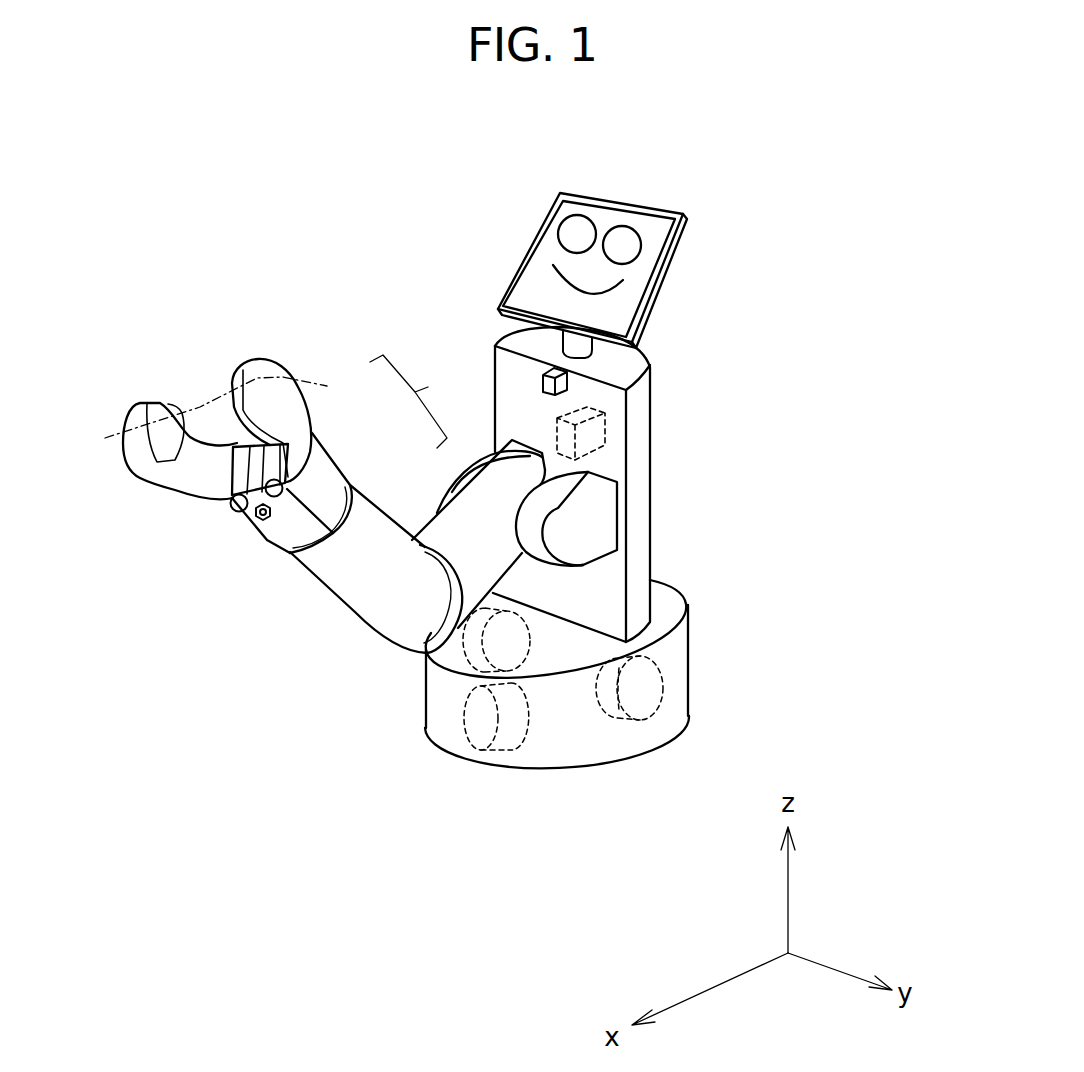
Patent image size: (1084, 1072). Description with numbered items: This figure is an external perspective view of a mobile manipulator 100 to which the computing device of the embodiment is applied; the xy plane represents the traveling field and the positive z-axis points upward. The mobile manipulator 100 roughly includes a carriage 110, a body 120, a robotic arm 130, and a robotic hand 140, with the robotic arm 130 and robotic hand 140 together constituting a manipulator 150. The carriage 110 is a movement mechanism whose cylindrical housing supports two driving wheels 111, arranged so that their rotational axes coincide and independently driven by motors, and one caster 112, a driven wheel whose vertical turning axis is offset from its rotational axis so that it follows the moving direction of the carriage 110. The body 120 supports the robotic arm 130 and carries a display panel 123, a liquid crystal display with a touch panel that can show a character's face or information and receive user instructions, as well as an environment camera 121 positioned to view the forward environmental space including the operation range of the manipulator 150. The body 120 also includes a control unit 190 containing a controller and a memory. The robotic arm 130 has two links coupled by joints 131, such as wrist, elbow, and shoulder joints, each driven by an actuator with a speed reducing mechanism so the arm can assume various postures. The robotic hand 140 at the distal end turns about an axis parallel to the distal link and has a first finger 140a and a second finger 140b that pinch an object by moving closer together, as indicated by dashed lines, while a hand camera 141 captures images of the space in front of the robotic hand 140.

The mobile manipulator 100 is at (768, 257).
The carriage 110 is at (688, 650).
The driving wheels 111 is at (470, 652).
The caster 112 is at (510, 733).
The body 120 is at (647, 517).
The environment camera 121 is at (545, 380).
The display panel 123 is at (655, 227).
The robotic arm 130 is at (466, 550).
The joints 131 is at (428, 642).
The robotic hand 140 is at (328, 468).
The first finger 140a is at (137, 407).
The second finger 140b is at (261, 357).
The hand camera 141 is at (265, 520).
The manipulator 150 is at (416, 399).
The control unit 190 is at (608, 414).